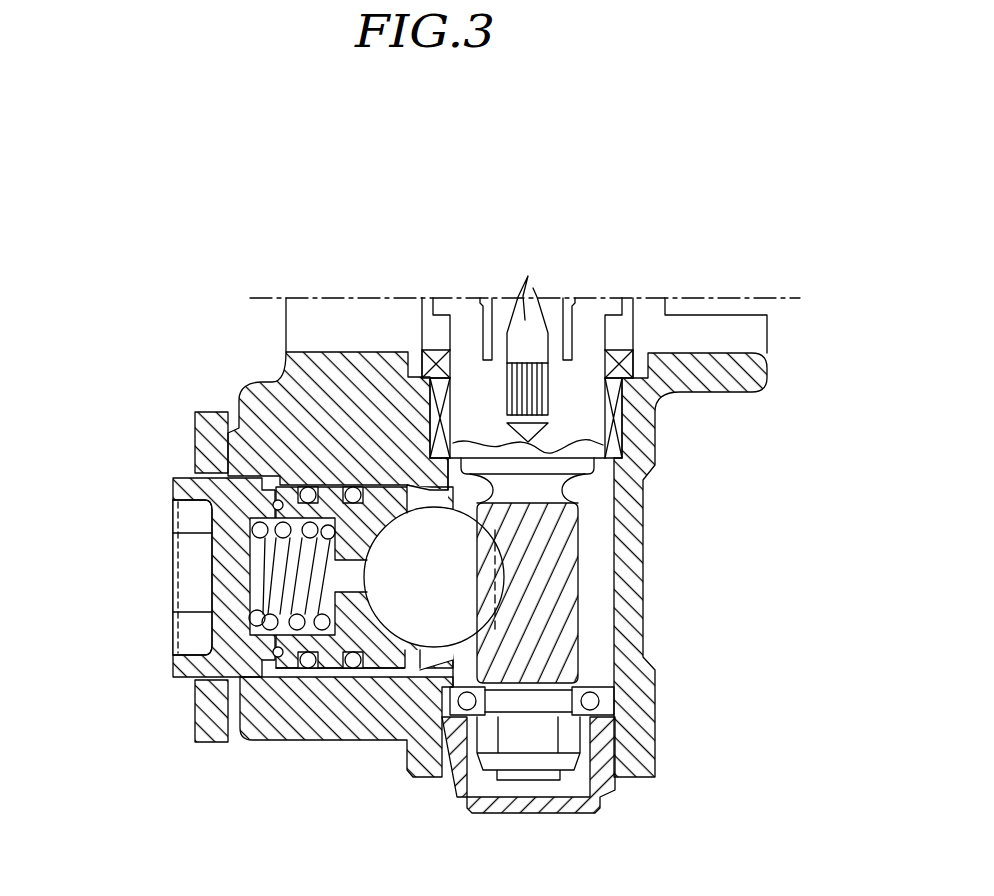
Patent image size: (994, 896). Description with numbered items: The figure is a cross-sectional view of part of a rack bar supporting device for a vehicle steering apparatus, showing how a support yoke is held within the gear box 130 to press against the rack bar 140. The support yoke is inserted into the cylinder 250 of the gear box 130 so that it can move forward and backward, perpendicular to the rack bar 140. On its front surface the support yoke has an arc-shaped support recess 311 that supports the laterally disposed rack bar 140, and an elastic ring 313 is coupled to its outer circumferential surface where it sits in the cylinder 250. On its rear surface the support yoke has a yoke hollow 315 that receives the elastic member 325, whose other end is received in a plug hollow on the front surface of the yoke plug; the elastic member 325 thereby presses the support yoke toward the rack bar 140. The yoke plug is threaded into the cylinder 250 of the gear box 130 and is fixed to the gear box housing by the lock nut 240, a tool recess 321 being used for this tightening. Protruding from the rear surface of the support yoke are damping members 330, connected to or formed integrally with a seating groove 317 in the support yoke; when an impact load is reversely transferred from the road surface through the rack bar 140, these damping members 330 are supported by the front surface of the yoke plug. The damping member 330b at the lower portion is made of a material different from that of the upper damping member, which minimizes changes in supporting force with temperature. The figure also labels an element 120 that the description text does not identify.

The armature 120 is at (565, 573).
The gear box 130 is at (253, 390).
The rack bar 140 is at (450, 602).
The lock nut 240 is at (193, 711).
The cylinder 250 is at (307, 670).
The support recess 311 is at (400, 740).
The elastic ring 313 is at (290, 672).
The yoke hollow 315 is at (250, 731).
The seating groove 317 is at (215, 428).
The tool recess 321 is at (180, 645).
The elastic member 325 is at (333, 487).
The damping member 330 is at (101, 518).
The damping member 330b is at (212, 508).